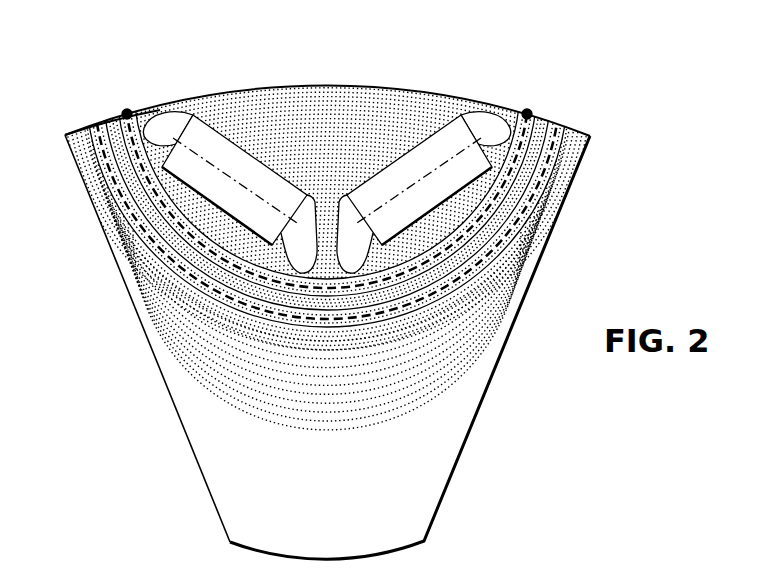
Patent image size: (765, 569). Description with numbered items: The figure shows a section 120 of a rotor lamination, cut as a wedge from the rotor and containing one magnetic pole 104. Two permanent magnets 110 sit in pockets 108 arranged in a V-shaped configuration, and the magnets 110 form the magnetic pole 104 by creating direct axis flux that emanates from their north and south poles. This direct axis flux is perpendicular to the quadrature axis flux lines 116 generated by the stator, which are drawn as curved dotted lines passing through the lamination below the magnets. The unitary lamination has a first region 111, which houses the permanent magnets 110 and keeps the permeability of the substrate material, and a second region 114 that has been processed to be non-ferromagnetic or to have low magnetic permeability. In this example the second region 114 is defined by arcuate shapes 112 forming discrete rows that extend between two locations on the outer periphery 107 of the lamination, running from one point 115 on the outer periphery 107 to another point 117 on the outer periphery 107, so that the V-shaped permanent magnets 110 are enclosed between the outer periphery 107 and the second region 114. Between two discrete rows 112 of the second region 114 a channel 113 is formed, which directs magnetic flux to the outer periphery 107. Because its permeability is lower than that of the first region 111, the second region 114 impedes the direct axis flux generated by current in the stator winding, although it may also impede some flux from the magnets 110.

The magnetic pole 104 is at (362, 84).
The outer periphery 107 is at (78, 130).
The pockets 108 is at (175, 138).
The permanent magnets 110 is at (240, 148).
The first region 111 is at (240, 502).
The arcuate shapes 112 is at (507, 108).
The channels 113 is at (545, 122).
The second region 114 is at (302, 290).
The point 115 is at (126, 110).
The quadrature axis flux lines 116 is at (462, 298).
The point 117 is at (528, 110).
The section 120 is at (516, 44).